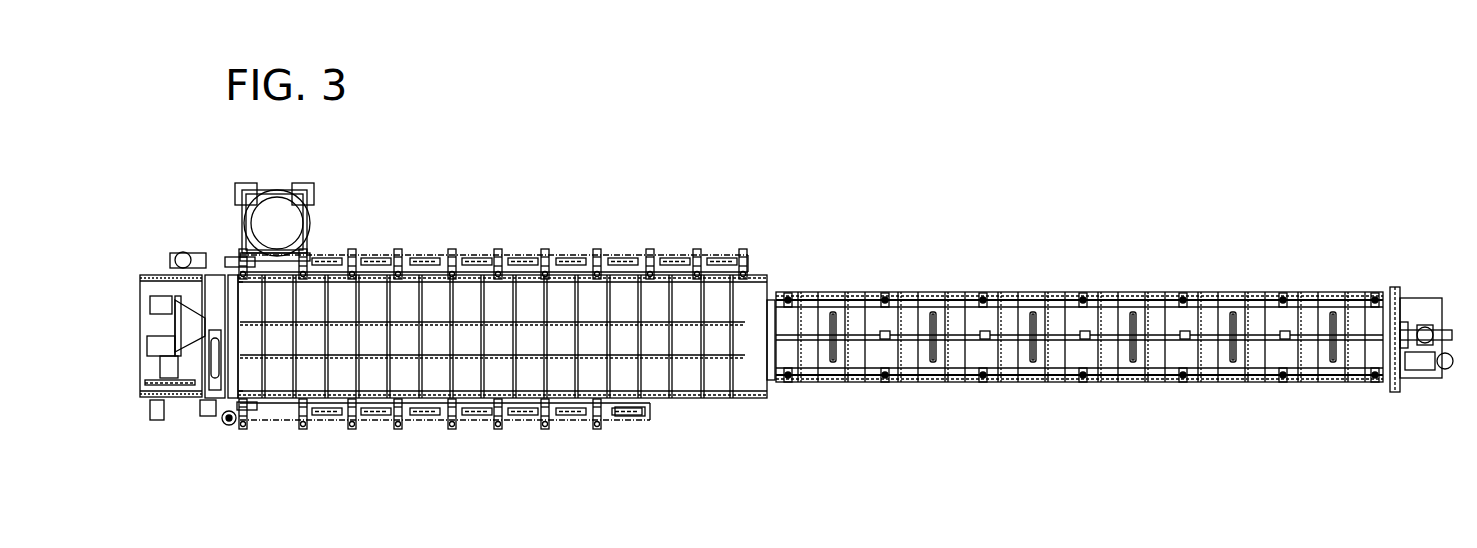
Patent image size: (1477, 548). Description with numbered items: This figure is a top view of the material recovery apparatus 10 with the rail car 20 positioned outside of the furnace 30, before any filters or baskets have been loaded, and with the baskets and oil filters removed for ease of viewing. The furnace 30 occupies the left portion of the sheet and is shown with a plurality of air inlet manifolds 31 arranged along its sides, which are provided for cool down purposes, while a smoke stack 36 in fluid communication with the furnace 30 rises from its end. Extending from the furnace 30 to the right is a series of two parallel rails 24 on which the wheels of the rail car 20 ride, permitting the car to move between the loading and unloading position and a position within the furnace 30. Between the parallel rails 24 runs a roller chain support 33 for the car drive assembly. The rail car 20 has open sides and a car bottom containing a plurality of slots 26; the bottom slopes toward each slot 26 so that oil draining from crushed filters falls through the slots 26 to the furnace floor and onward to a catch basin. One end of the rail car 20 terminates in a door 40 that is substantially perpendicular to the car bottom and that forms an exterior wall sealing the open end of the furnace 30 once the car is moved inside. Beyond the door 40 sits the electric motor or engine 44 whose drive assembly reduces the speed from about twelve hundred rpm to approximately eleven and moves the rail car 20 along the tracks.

The material recovery apparatus 10 is at (862, 156).
The rail car 20 is at (1276, 252).
The rails 24 is at (1032, 296).
The slots 26 is at (933, 320).
The furnace 30 is at (500, 233).
The air inlet manifolds 31 is at (605, 256).
The roller chain support 33 is at (958, 342).
The smoke stack 36 is at (285, 223).
The door 40 is at (1393, 288).
The electric motor or engine 44 is at (1420, 330).